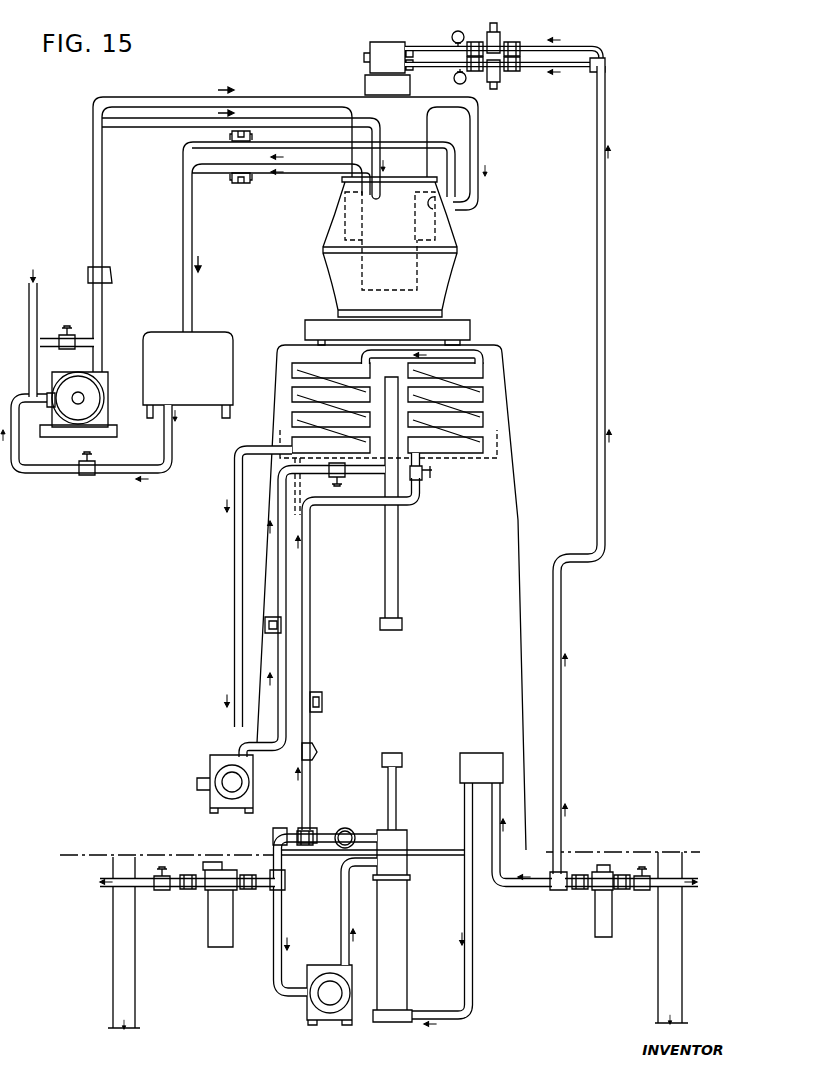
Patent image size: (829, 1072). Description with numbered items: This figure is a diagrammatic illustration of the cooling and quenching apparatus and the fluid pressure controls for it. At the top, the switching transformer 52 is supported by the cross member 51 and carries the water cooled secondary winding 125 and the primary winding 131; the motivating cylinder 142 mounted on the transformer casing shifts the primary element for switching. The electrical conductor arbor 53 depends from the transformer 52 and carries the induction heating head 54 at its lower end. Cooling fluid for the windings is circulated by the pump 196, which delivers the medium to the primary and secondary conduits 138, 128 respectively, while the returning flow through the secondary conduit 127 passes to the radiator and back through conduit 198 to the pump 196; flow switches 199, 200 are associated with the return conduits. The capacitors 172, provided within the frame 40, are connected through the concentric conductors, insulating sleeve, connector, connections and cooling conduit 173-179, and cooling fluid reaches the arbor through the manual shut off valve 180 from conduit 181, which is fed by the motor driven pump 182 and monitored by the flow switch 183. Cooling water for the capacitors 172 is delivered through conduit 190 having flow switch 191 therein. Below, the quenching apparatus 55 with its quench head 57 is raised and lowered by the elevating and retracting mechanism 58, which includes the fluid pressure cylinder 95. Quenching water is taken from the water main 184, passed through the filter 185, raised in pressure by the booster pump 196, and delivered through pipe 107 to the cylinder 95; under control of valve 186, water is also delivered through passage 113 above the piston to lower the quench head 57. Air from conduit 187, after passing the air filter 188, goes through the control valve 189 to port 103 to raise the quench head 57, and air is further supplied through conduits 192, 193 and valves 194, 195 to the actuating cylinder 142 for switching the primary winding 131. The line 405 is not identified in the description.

The frame 40 is at (515, 480).
The cross member 51 is at (326, 325).
The switching transformer 52 is at (447, 243).
The electrical conductor arbor 53 is at (398, 550).
The induction heating head 54 is at (402, 624).
The quenching apparatus 55 is at (398, 802).
The quench head 57 is at (400, 756).
The elevating and retracting mechanism 58 is at (416, 907).
The fluid pressure cylinder 95 is at (400, 972).
The port 103 is at (474, 1006).
The quenching fluid supply pipe 107 is at (352, 862).
The fluid passage 113 is at (367, 833).
The water cooled secondary winding 125 is at (364, 227).
The cooling water conduit 127 is at (304, 170).
The cooling water conduit 128 is at (336, 121).
The water cooled primary winding 131 is at (438, 226).
The flexible water conducting conduit 138 is at (480, 144).
The motivating cylinder 142 is at (377, 40).
The capacitors 172 is at (477, 367).
The capacitor connections and cooling conduit 173-179 is at (377, 470).
The manual shut off valve 180 is at (330, 477).
The conduit 181 is at (280, 588).
The motor driven pump 182 is at (230, 778).
The flow switch 183 is at (265, 626).
The water main 184 is at (147, 887).
The filter 185 is at (212, 927).
The valve 186 is at (345, 828).
The conduit 187 is at (648, 865).
The air filter 188 is at (612, 928).
The control valve 189 is at (468, 757).
The conduit 190 is at (311, 580).
The flow switch 191 is at (323, 703).
The conduit 192 is at (558, 44).
The conduit 193 is at (578, 67).
The valve 194 is at (500, 31).
The valve 195 is at (500, 89).
The pump 196 is at (90, 390).
The conduit 198 is at (102, 478).
The flow switch 199 is at (232, 135).
The flow switch 200 is at (242, 183).
The pipe 405 is at (438, 142).